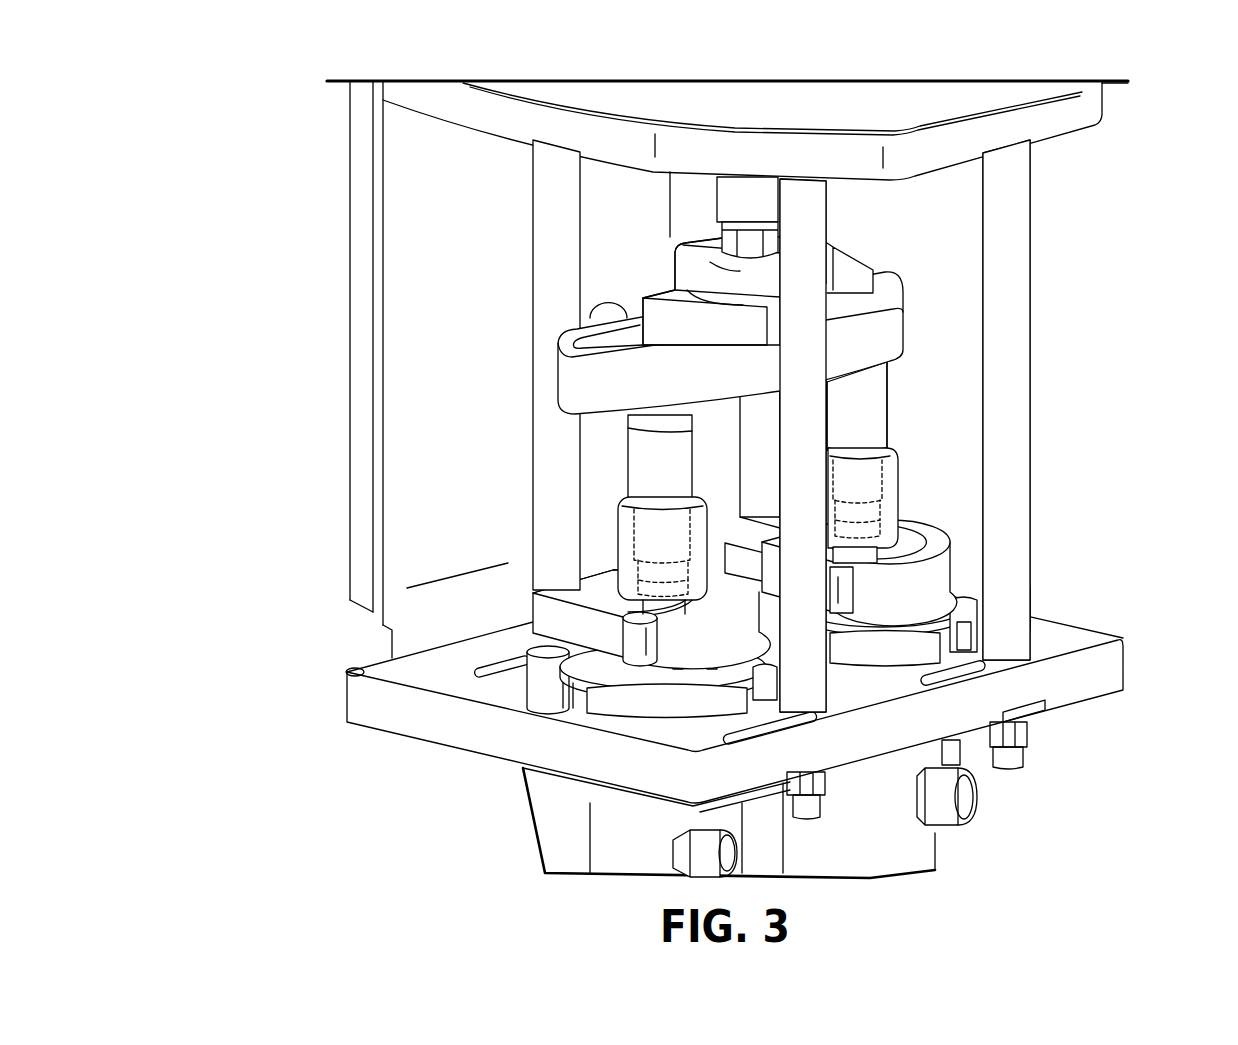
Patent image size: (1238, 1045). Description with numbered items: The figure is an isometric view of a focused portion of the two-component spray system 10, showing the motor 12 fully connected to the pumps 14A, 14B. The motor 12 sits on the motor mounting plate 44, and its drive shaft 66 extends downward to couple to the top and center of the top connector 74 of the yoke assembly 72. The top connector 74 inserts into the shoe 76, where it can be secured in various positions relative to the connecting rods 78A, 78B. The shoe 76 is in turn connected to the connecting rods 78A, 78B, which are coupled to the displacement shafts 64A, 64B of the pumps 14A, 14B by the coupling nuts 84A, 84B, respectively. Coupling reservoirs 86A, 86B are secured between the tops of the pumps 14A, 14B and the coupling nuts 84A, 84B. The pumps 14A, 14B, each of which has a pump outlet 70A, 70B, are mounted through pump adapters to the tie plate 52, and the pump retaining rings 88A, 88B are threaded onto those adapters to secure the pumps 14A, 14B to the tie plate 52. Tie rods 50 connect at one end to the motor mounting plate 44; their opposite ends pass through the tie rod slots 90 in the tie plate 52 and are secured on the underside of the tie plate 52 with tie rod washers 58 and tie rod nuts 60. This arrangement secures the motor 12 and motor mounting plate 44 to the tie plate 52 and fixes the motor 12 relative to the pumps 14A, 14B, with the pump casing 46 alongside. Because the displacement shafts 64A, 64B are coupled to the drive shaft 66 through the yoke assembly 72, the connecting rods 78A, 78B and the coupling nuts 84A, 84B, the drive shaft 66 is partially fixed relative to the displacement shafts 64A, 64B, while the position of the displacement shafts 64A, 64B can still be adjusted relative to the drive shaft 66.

The spray system 10 is at (232, 158).
The motor 12 is at (740, 100).
The pump 14A is at (620, 845).
The pump 14B is at (865, 850).
The motor mounting plate 44 is at (1103, 103).
The pump casing 46 is at (433, 300).
The tie rods 50 is at (548, 226).
The tie plate 52 is at (1093, 640).
The tie rod washers 58 is at (1045, 712).
The tie rod nuts 60 is at (1030, 724).
The displacement shaft 64A is at (650, 605).
The displacement shaft 64B is at (900, 533).
The drive shaft 66 is at (754, 208).
The pump outlet 70A is at (683, 860).
The pump outlet 70B is at (960, 813).
The yoke assembly 72 is at (763, 295).
The top connector 74 is at (848, 277).
The shoe 76 is at (888, 320).
The connecting rod 78A is at (683, 472).
The connecting rod 78B is at (882, 419).
The coupling nut 84A is at (627, 527).
The coupling nut 84B is at (890, 473).
The coupling reservoir 86A is at (573, 627).
The coupling reservoir 86B is at (922, 545).
The pump retaining ring 88A is at (622, 650).
The pump retaining ring 88B is at (963, 590).
The tie rod slots 90 is at (476, 668).